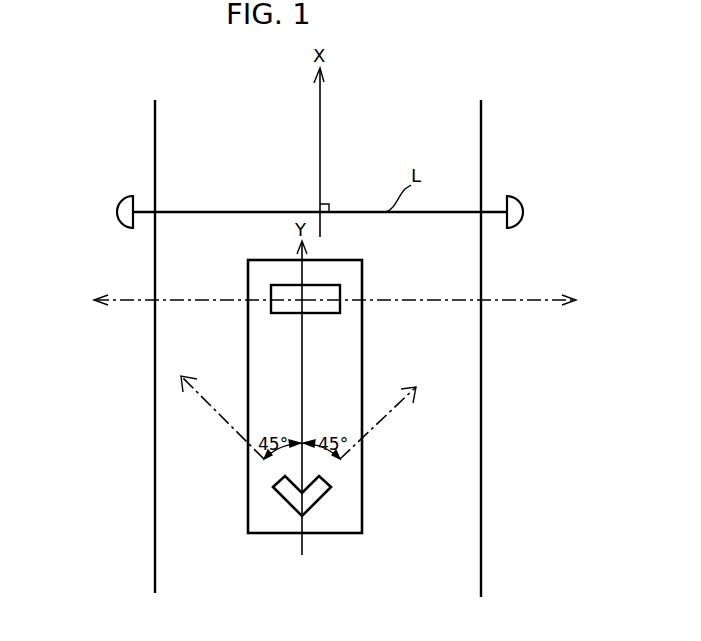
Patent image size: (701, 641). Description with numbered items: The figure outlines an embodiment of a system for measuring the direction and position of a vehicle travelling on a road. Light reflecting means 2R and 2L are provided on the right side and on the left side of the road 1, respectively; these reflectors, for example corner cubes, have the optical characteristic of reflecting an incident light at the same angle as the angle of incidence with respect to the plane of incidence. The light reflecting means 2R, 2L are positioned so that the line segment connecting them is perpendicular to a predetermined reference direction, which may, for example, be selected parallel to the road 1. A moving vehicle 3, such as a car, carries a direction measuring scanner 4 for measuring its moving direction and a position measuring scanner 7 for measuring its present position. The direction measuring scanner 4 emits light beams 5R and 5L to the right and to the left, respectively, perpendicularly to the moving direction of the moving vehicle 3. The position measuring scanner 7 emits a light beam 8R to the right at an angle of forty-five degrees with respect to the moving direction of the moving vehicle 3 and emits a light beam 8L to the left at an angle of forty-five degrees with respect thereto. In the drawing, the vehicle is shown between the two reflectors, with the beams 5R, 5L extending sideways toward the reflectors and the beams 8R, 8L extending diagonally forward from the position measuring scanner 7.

The road 1 is at (462, 119).
The light reflecting means 2L is at (118, 205).
The light reflecting means 2R is at (514, 206).
The moving vehicle 3 is at (363, 360).
The direction measuring scanner 4 is at (285, 316).
The light beam 5L is at (127, 300).
The light beam 5R is at (512, 300).
The position measuring scanner 7 is at (332, 497).
The light beam 8L is at (244, 439).
The light beam 8R is at (377, 428).